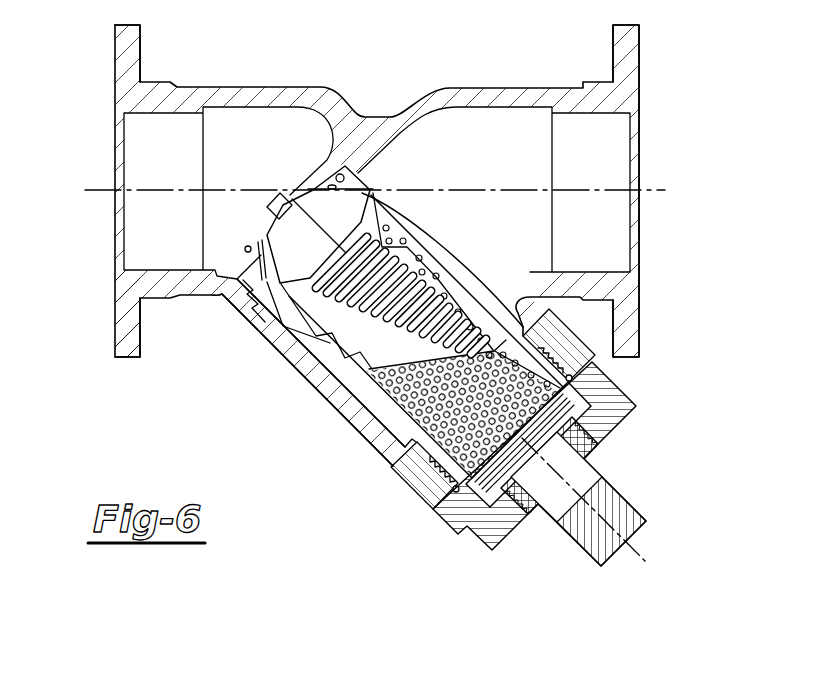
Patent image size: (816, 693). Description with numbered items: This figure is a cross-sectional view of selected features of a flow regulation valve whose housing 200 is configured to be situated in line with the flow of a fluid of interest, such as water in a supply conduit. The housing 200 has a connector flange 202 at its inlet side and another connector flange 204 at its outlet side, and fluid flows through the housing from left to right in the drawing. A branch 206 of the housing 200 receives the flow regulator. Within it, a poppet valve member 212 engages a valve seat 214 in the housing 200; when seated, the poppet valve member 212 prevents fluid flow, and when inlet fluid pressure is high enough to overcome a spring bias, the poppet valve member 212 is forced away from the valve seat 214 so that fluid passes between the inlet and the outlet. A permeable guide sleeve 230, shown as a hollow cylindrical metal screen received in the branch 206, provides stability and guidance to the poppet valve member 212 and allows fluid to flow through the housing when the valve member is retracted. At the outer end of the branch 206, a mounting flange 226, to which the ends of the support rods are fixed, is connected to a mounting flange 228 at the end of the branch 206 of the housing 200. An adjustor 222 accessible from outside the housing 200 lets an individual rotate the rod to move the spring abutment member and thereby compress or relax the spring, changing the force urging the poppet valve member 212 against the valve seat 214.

The housing 200 is at (453, 88).
The connector flange 202 is at (125, 52).
The connector flange 204 is at (632, 58).
The branch 206 is at (330, 388).
The poppet valve member 212 is at (267, 283).
The valve seat 214 is at (245, 243).
The adjustor 222 is at (632, 520).
The mounting flange 226 is at (492, 528).
The mounting flange 228 is at (427, 490).
The permeable guide sleeve 230 is at (423, 417).